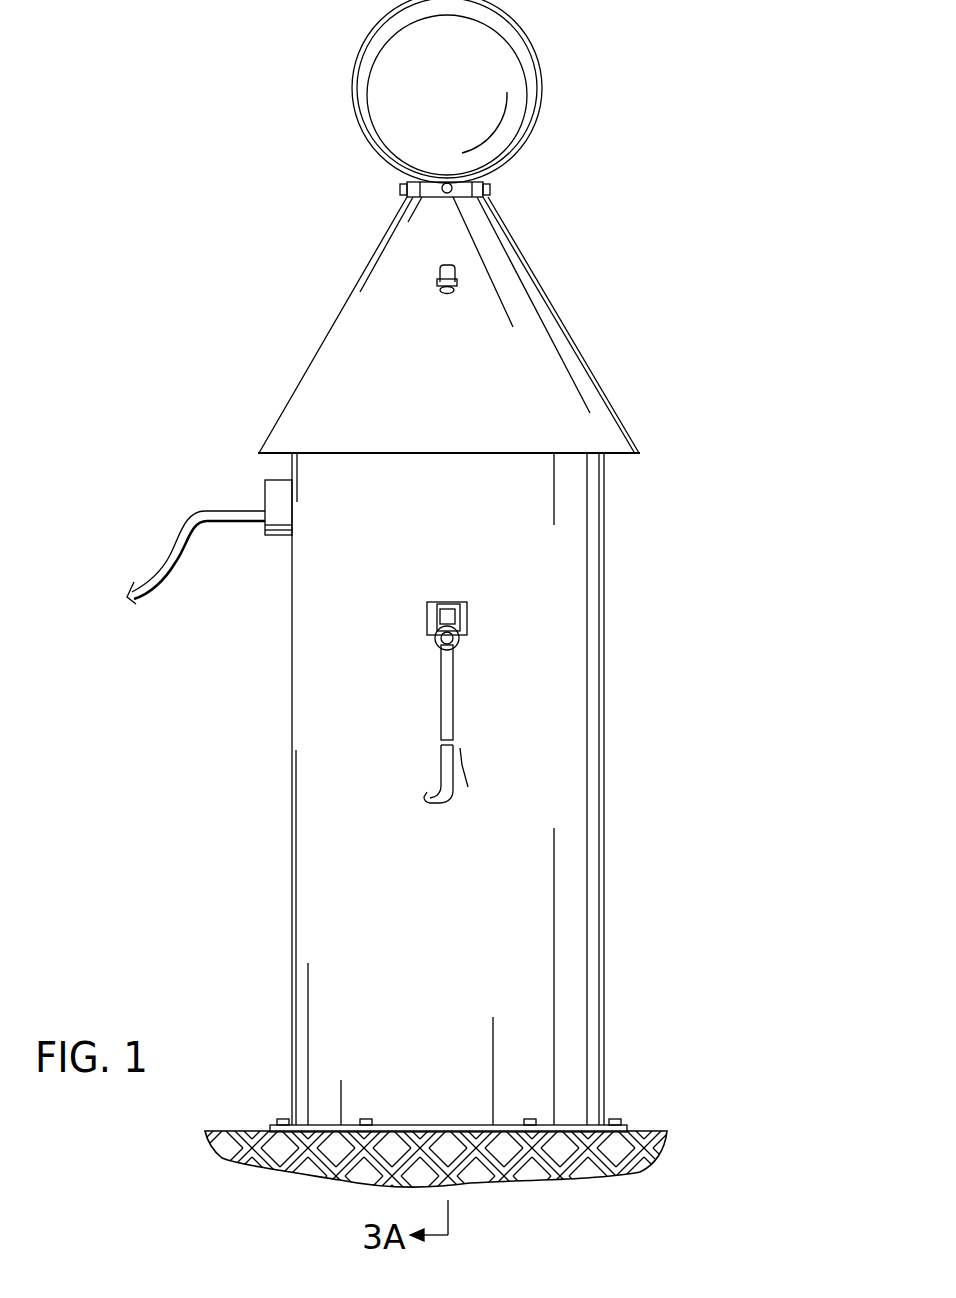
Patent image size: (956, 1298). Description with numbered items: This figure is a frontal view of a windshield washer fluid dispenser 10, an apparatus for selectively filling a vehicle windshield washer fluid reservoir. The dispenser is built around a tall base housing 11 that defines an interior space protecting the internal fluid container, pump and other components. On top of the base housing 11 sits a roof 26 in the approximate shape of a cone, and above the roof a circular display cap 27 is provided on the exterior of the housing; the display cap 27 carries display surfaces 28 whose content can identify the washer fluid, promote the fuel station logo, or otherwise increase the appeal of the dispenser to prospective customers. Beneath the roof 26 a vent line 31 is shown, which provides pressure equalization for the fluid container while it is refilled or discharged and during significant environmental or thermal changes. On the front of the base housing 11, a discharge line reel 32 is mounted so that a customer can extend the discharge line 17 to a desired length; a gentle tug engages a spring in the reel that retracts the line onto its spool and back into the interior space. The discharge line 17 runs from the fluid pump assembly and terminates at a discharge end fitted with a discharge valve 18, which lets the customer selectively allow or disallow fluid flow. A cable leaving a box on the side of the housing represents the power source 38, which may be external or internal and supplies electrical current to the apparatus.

The windshield washer fluid dispenser 10 is at (622, 343).
The base housing 11 is at (538, 933).
The discharge line 17 is at (452, 693).
The discharge valve 18 is at (445, 777).
The roof 26 is at (395, 365).
The display cap 27 is at (523, 35).
The display surface 28 is at (435, 118).
The vent line 31 is at (452, 268).
The discharge line reel 32 is at (447, 612).
The power source 38 is at (275, 495).